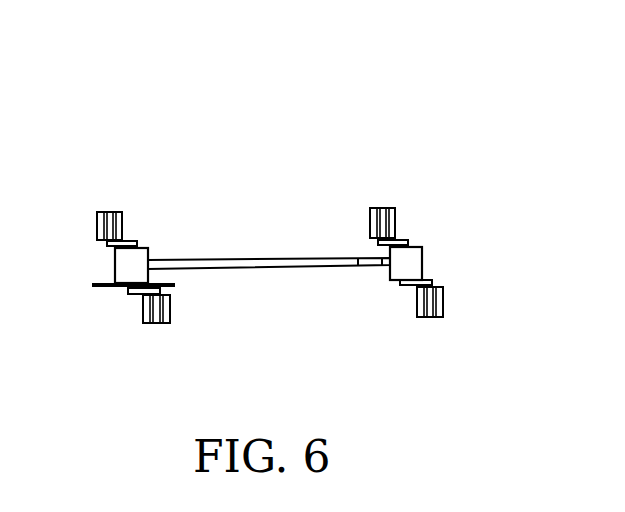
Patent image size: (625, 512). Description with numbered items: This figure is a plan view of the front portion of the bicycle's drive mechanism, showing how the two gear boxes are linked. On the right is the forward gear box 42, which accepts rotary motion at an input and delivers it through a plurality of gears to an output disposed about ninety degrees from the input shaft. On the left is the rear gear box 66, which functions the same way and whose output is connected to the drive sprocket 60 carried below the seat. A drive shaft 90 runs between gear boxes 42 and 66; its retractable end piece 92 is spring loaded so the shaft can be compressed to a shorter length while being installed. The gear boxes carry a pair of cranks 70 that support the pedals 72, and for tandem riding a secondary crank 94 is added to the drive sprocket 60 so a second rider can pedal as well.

The forward gear box 42 is at (412, 262).
The drive sprocket 60 is at (100, 288).
The rear gear box 66 is at (141, 258).
The cranks 70 is at (402, 242).
The pedals 72 is at (378, 208).
The drive shaft 90 is at (215, 265).
The retractable end piece 92 is at (368, 265).
The secondary crank 94 is at (134, 243).